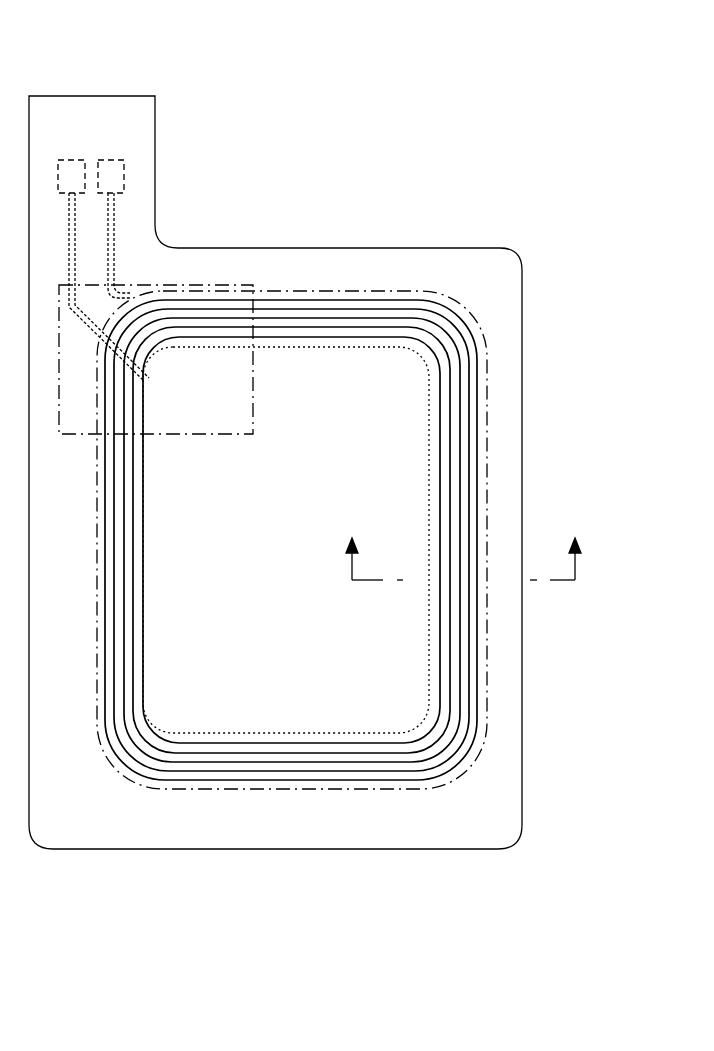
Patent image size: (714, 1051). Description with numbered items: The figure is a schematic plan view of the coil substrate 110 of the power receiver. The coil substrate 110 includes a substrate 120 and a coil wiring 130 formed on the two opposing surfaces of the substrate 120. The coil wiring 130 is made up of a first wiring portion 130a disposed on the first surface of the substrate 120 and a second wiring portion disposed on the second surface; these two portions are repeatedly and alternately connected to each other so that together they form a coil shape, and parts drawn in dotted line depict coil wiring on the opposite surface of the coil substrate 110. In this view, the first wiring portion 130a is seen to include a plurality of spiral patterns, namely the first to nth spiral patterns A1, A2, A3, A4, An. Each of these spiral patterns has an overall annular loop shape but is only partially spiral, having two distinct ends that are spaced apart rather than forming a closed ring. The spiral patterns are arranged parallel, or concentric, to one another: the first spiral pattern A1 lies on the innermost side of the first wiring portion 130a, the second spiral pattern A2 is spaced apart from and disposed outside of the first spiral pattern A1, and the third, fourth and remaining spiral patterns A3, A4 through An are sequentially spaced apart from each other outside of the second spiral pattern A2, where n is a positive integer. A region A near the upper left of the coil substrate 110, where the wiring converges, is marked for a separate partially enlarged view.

The coil substrate 110 is at (424, 35).
The substrate 120 is at (517, 311).
The coil wiring 130 is at (365, 491).
The first wiring portion 130a is at (383, 540).
The first spiral pattern A1 is at (440, 624).
The second spiral pattern A2 is at (448, 645).
The third spiral pattern A3 is at (457, 668).
The fourth spiral pattern A4 is at (291, 540).
The nth spiral pattern An is at (478, 727).
The region A is at (188, 285).